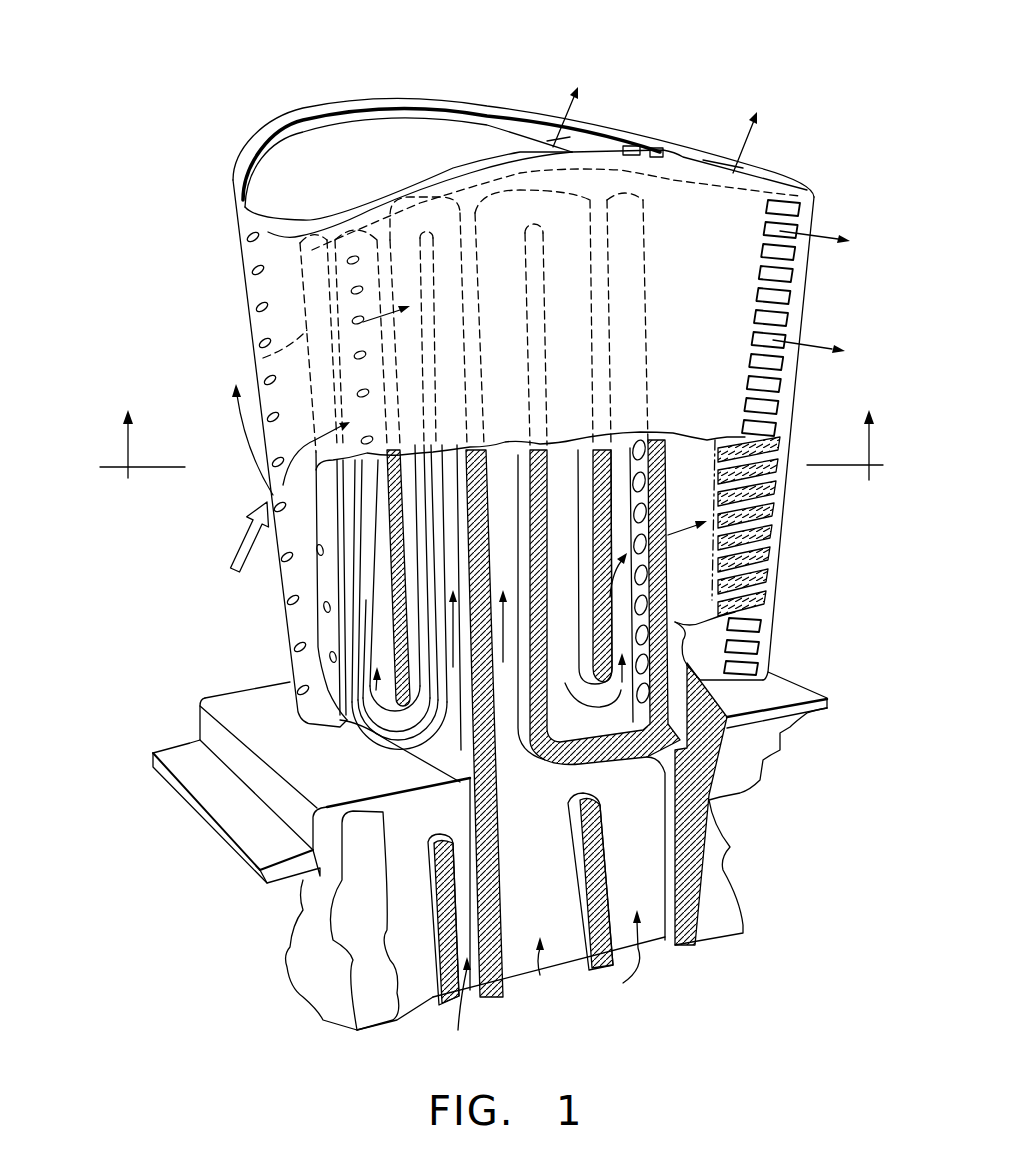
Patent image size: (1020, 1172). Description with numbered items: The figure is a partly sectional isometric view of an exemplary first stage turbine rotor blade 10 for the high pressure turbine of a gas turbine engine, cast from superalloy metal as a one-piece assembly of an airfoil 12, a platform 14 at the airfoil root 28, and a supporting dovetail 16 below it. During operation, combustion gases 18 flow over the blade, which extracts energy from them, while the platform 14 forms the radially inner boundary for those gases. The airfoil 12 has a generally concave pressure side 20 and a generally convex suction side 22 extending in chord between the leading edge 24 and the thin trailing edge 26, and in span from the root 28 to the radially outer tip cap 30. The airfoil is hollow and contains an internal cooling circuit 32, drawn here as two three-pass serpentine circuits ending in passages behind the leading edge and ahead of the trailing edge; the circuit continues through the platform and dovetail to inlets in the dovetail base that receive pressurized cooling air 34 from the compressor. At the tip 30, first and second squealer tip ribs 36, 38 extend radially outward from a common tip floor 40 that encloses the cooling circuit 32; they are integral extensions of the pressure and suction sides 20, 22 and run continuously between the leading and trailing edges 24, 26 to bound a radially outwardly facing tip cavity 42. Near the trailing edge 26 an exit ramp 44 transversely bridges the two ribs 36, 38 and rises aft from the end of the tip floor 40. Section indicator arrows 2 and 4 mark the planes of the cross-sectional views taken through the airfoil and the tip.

The section line 2- 2 is at (491, 422).
The section line 4- 4 is at (664, 111).
The turbine rotor blade 10 is at (152, 200).
The airfoil 12 is at (820, 212).
The platform 14 is at (222, 690).
The dovetail 16 is at (303, 912).
The combustion gases 18 is at (232, 545).
The pressure side 20 is at (517, 315).
The suction side 22 is at (247, 323).
The leading edge 24 is at (263, 358).
The trailing edge 26 is at (807, 310).
The airfoil root 28 is at (307, 730).
The tip cap 30 is at (441, 93).
The internal cooling circuit 32 is at (549, 812).
The pressurized cooling air 34 is at (540, 975).
The first squealer tip rib 36 is at (520, 150).
The second squealer tip rib 38 is at (480, 100).
The tip floor 40 is at (333, 187).
The tip cavity 42 is at (393, 130).
The exit ramp 44 is at (650, 142).